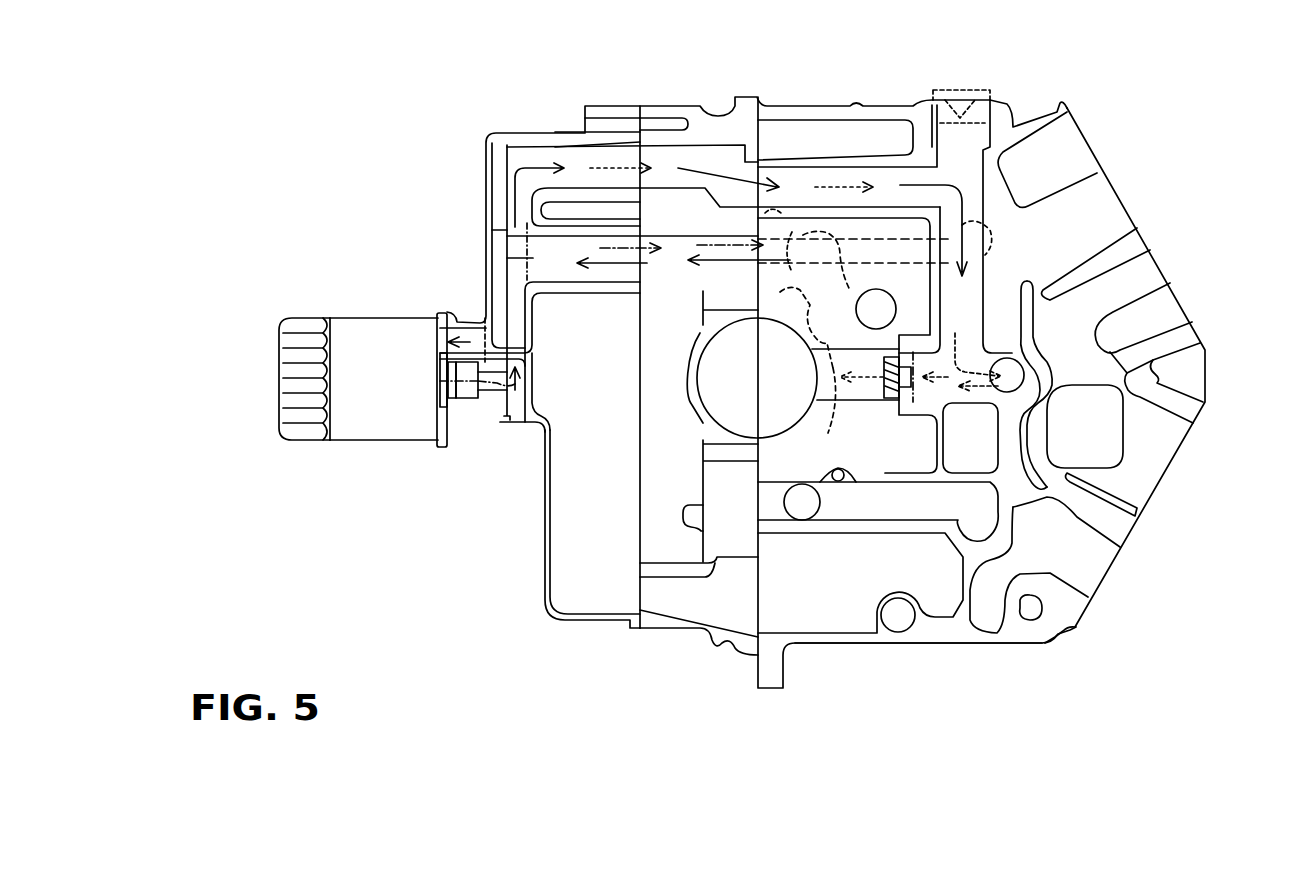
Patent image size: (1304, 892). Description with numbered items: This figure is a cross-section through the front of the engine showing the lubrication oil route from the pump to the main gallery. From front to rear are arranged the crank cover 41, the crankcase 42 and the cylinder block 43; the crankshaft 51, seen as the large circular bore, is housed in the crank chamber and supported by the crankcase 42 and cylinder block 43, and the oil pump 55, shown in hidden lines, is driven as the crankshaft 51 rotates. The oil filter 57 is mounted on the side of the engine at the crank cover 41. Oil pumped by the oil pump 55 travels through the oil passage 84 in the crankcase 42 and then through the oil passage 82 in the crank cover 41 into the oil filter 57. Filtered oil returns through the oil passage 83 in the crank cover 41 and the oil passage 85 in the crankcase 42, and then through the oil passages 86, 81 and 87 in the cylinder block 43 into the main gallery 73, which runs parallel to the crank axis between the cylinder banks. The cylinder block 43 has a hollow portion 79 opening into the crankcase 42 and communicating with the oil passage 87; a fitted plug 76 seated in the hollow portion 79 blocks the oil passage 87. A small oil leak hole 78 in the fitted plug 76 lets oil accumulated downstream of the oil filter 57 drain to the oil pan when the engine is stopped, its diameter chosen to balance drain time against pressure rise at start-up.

The crank cover 41 is at (547, 566).
The crankcase 42 is at (668, 630).
The cylinder block 43 is at (918, 644).
The crankshaft 51 is at (692, 394).
The oil pump 55 is at (830, 220).
The oil filter 57 is at (358, 334).
The main gallery 73 is at (1015, 367).
The fitted plug 76 is at (887, 378).
The oil leak hole 78 is at (902, 395).
The hollow portion 79 is at (860, 345).
The oil passage 81 is at (983, 275).
The oil passage 82 is at (492, 258).
The oil passage 83 is at (486, 172).
The oil passage 84 is at (670, 283).
The oil passage 85 is at (700, 127).
The oil passage 86 is at (927, 157).
The oil passage 87 is at (955, 390).